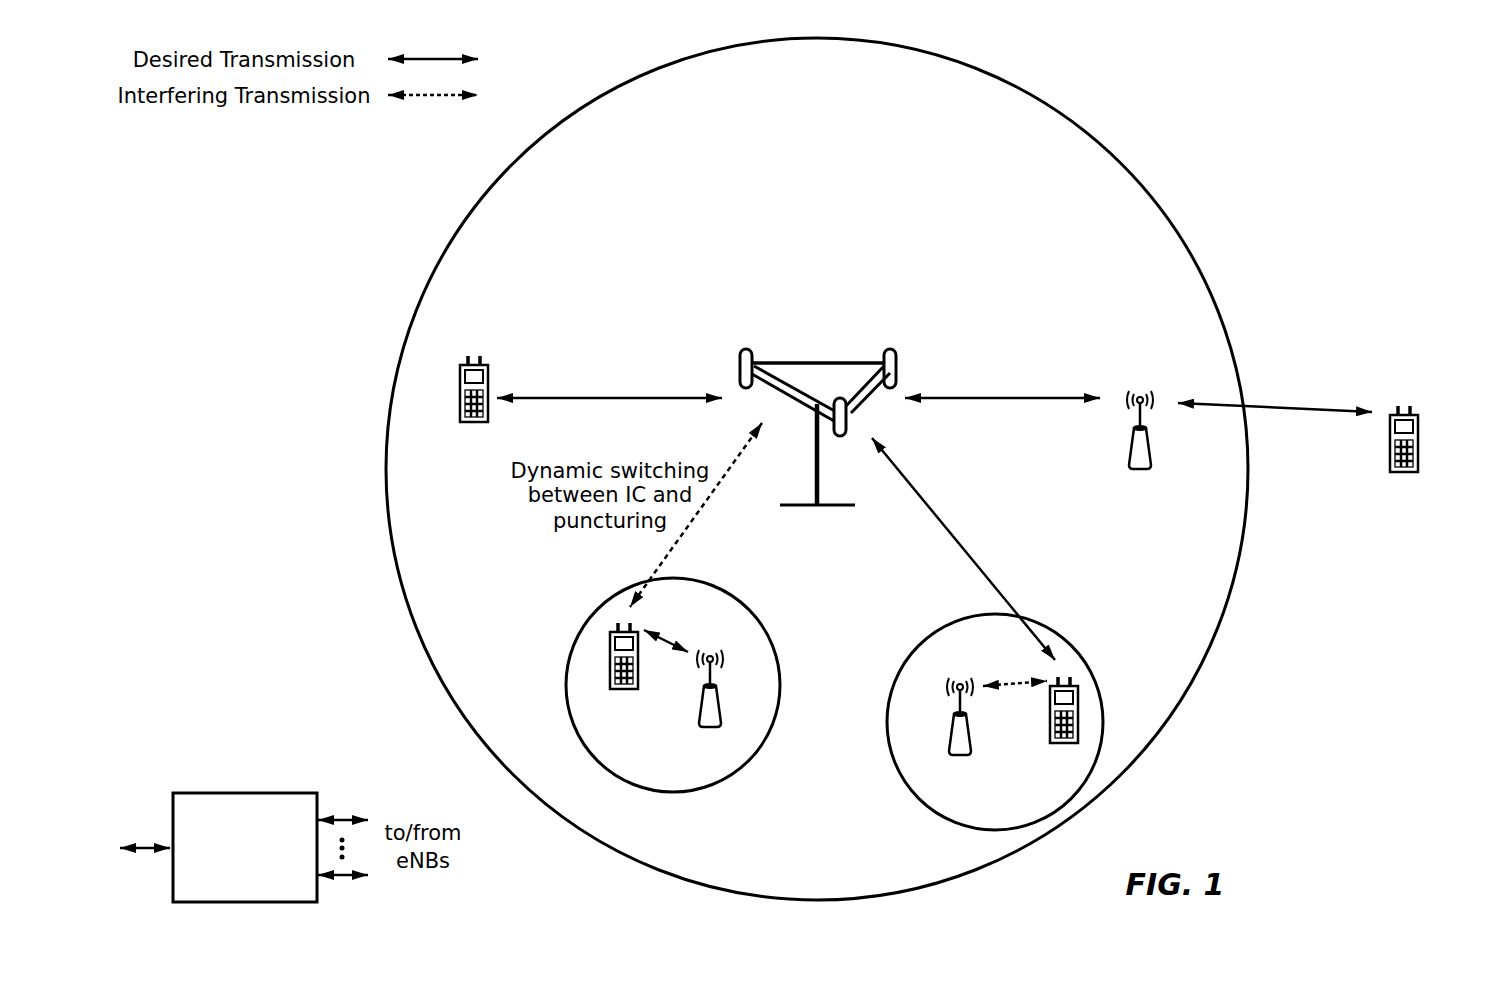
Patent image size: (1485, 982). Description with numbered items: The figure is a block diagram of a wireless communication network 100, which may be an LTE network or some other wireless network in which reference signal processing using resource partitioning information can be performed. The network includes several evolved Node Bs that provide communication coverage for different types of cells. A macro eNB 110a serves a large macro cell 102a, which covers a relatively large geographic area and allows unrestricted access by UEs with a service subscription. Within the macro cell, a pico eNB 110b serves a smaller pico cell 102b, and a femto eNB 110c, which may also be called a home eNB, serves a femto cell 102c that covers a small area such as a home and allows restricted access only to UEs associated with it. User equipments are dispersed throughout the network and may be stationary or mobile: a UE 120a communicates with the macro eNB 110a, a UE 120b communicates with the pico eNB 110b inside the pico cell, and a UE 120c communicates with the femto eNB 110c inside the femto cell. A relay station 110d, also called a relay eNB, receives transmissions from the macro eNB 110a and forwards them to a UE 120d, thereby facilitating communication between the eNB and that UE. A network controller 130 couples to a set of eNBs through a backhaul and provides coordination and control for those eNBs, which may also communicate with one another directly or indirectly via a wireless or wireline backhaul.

The wireless communication network 100 is at (1318, 108).
The macro cell 102a is at (1101, 147).
The pico cell 102b is at (757, 618).
The femto cell 102c is at (916, 650).
The macro eNB 110a is at (813, 363).
The pico eNB 110b is at (726, 712).
The femto eNB 110c is at (945, 740).
The relay station 110d is at (1142, 396).
The UE 120a is at (460, 380).
The UE 120b is at (610, 680).
The UE 120c is at (1050, 735).
The UE 120d is at (1418, 428).
The network controller 130 is at (240, 793).